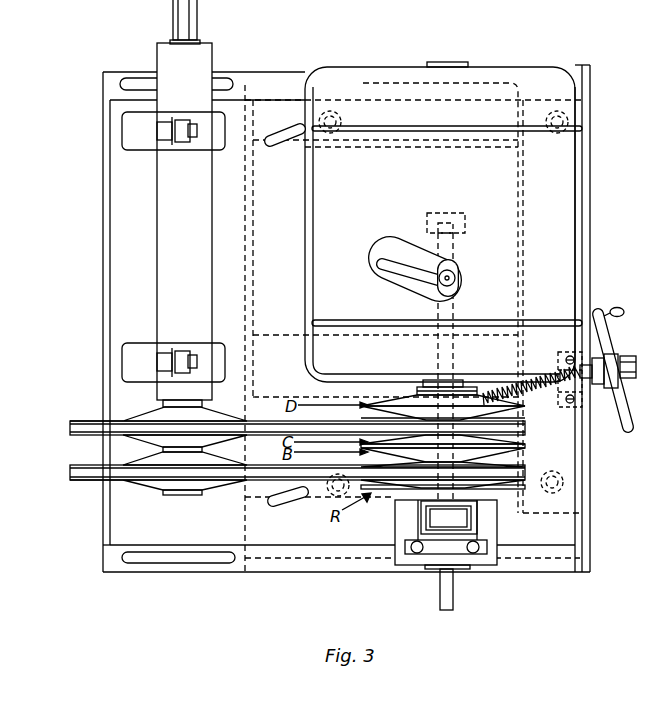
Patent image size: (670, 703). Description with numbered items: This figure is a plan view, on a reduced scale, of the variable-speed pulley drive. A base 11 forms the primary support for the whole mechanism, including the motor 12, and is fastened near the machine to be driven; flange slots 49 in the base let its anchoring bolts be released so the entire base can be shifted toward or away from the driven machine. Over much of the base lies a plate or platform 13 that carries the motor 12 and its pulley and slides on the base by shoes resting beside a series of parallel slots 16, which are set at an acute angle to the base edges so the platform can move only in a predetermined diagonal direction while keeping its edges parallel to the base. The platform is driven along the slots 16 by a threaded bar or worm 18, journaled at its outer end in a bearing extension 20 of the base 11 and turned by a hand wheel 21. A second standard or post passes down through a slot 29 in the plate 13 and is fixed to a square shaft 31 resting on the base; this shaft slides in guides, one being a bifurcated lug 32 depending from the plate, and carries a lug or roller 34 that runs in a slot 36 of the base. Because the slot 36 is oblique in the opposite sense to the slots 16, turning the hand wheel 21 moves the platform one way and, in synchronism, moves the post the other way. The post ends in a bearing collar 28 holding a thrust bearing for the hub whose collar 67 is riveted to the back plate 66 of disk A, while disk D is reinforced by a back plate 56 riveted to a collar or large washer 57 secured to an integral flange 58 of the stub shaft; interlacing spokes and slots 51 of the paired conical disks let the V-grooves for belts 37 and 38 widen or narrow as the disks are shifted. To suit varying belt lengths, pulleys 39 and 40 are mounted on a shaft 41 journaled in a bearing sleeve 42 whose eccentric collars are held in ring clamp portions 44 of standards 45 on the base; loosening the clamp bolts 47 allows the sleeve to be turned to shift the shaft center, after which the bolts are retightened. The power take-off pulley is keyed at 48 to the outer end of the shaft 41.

The base 11 is at (105, 546).
The motor 12 is at (565, 209).
The plate or platform 13 is at (567, 509).
The slots 16 is at (283, 143).
The threaded bar or worm 18 is at (590, 380).
The bearing extension 20 is at (595, 368).
The hand wheel 21 is at (623, 413).
The bearing collar 28 is at (422, 545).
The slot 29 is at (470, 525).
The square shaft 31 is at (448, 308).
The bifurcated lug 32 is at (458, 218).
The lug or roller 34 is at (457, 273).
The slot 36 is at (387, 262).
The pulley belt 37 is at (72, 428).
The pulley belt 38 is at (72, 472).
The pulley 39 is at (80, 420).
The pulley 40 is at (78, 483).
The shaft 41 is at (173, 406).
The bearing sleeve 42 is at (165, 273).
The ring clamp portions 44 is at (137, 138).
The standards 45 is at (469, 558).
The clamp bolts 47 is at (193, 139).
The key 48 is at (190, 7).
The flange slots 49 is at (223, 82).
The slots 51 is at (478, 478).
The back plate 56 is at (470, 400).
The collar or large washer 57 is at (452, 394).
The flange 58 is at (470, 426).
The back plate 66 is at (418, 494).
The collar 67 is at (432, 518).